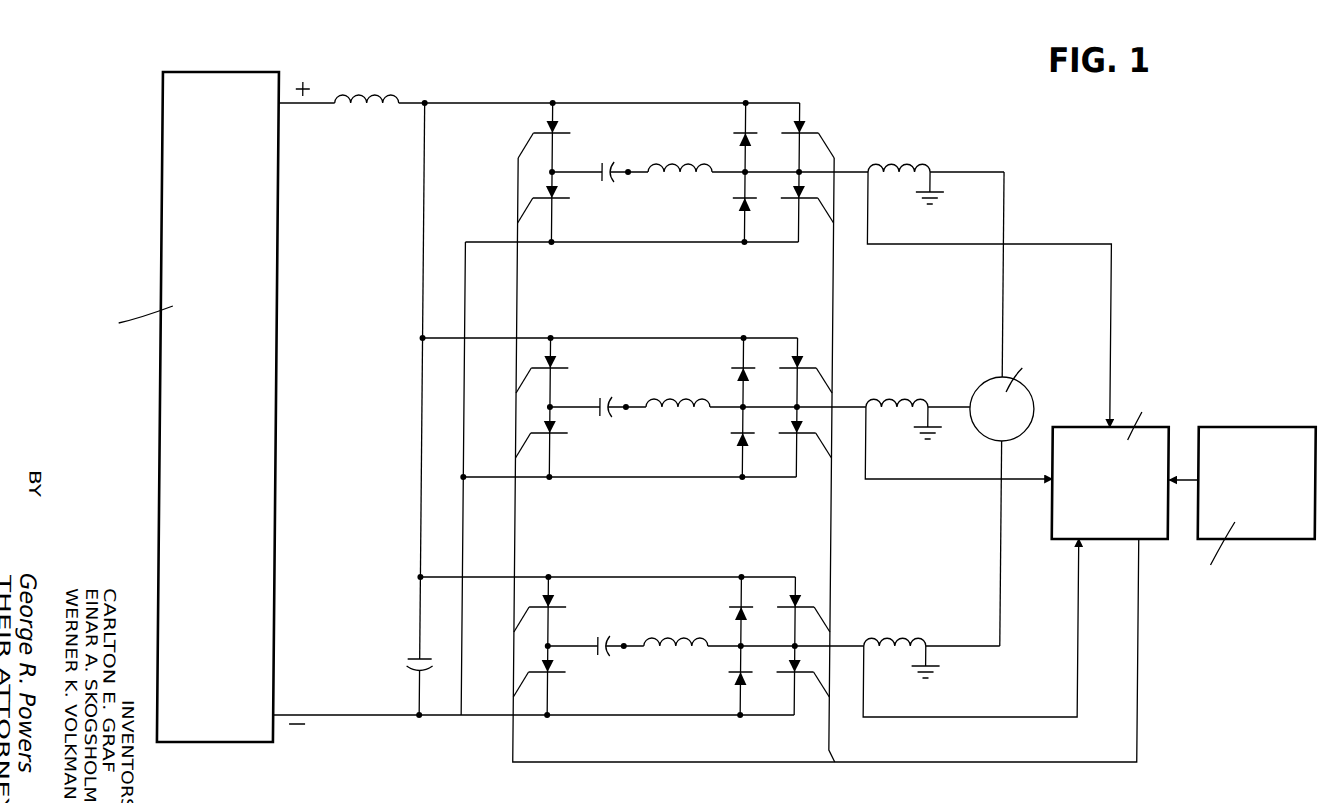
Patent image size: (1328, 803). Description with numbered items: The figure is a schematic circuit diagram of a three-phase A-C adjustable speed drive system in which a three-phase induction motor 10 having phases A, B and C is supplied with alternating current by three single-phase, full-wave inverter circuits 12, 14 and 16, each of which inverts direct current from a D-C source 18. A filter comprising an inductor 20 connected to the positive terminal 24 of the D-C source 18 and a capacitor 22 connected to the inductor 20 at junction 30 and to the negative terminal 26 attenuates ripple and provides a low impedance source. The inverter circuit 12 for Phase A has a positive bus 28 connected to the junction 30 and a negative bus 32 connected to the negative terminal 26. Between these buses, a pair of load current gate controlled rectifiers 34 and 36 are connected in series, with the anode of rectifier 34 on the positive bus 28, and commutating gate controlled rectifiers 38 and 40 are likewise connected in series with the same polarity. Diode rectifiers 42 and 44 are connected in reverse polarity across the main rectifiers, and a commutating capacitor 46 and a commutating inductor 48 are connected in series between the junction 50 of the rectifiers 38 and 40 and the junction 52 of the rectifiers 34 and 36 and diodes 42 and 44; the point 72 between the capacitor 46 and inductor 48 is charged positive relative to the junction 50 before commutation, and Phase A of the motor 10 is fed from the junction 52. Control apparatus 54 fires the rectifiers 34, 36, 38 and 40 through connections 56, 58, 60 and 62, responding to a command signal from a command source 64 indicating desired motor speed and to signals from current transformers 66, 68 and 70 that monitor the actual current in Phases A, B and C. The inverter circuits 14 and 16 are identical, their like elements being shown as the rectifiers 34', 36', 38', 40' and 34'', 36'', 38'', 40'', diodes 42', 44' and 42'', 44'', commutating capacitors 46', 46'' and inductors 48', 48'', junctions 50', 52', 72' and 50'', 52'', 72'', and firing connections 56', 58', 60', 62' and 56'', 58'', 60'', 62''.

The three-phase induction motor 10 is at (993, 420).
The inverter circuit 12 is at (656, 95).
The inverter circuit 14 is at (657, 332).
The inverter circuit 16 is at (636, 576).
The D-C source 18 is at (202, 393).
The inductor 20 is at (372, 93).
The capacitor 22 is at (410, 660).
The positive terminal 24 is at (280, 104).
The negative terminal 26 is at (279, 714).
The positive bus 28 is at (482, 101).
The electrical junction 30 is at (424, 101).
The negative bus 32 is at (464, 240).
The load current gate controlled rectifier 34 is at (812, 100).
The load current gate controlled rectifier 36 is at (788, 209).
The gate controlled rectifier 38 is at (569, 120).
The gate controlled rectifier 40 is at (569, 205).
The diode rectifier 42 is at (752, 107).
The diode rectifier 44 is at (717, 210).
The commutating capacitor 46 is at (616, 160).
The commutating inductor 48 is at (680, 154).
The junction 50 is at (569, 157).
The junction 52 is at (749, 185).
The control apparatus 54 is at (1093, 494).
The connection 56 is at (847, 138).
The connection 58 is at (815, 234).
The connection 60 is at (514, 140).
The connection 62 is at (507, 206).
The command source 64 is at (1239, 494).
The current transformer 66 is at (930, 168).
The current transformer 68 is at (905, 403).
The current transformer 70 is at (905, 642).
The point 72 is at (630, 189).
The load current gate controlled rectifier 34' is at (811, 335).
The load current gate controlled rectifier 36' is at (781, 444).
The gate controlled rectifier 38' is at (569, 355).
The gate controlled rectifier 40' is at (568, 440).
The diode rectifier 42' is at (751, 342).
The diode rectifier 44' is at (715, 445).
The commutating capacitor 46' is at (621, 395).
The commutating inductor 48' is at (678, 389).
The junction 50' is at (570, 392).
The junction 52' is at (743, 420).
The connection 56' is at (846, 373).
The connection 58' is at (810, 468).
The connection 60' is at (511, 375).
The connection 62' is at (504, 441).
The point 72' is at (630, 424).
The load current gate controlled rectifier 34'' is at (810, 573).
The load current gate controlled rectifier 36'' is at (778, 683).
The gate controlled rectifier 38'' is at (572, 594).
The gate controlled rectifier 40'' is at (571, 682).
The diode rectifier 42'' is at (751, 581).
The diode rectifier 44'' is at (711, 687).
The commutating capacitor 46'' is at (622, 634).
The commutating inductor 48'' is at (676, 627).
The junction 50'' is at (571, 630).
The junction 52'' is at (740, 658).
The connection 56'' is at (845, 607).
The connection 58'' is at (800, 708).
The connection 60'' is at (505, 613).
The connection 62'' is at (501, 680).
The point 72'' is at (629, 662).